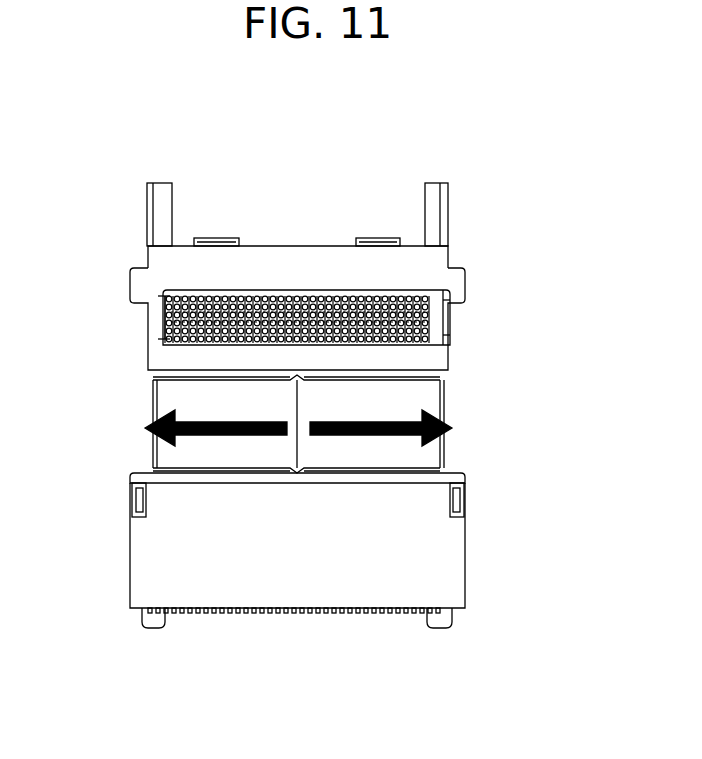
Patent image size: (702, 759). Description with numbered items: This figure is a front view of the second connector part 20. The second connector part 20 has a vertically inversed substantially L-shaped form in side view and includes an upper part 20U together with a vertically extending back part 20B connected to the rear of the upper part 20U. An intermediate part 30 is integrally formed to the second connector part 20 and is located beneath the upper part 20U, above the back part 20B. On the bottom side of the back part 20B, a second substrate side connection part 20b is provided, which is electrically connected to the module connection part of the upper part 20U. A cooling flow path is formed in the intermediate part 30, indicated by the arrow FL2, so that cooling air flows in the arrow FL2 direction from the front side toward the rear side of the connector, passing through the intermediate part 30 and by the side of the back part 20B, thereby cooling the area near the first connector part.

The second connector part 20 is at (85, 191).
The upper part 20U is at (474, 253).
The intermediate part 30 is at (464, 456).
The arrow FL2 is at (202, 422).
The back part 20B is at (487, 524).
The second substrate side connection part 20b is at (231, 616).